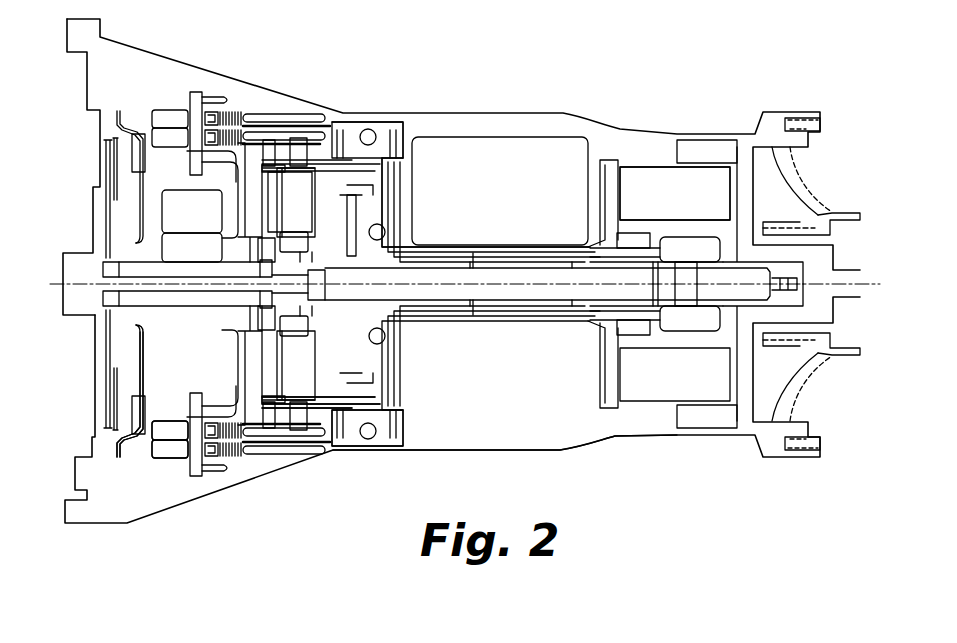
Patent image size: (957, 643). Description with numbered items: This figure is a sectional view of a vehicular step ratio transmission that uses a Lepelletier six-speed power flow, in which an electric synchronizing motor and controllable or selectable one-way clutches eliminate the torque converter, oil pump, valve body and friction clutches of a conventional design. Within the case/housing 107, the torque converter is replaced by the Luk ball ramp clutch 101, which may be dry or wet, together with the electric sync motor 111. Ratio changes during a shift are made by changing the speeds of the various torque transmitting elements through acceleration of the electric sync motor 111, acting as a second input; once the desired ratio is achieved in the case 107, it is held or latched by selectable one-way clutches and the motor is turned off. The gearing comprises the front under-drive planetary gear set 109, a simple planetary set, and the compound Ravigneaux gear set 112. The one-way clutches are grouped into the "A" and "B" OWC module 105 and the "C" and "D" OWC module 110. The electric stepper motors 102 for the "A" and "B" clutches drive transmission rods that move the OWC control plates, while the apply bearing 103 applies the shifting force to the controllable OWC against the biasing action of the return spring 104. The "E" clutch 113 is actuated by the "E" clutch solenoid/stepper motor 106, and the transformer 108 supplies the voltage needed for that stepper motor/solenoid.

The Luk ball ramp clutch 101 is at (133, 456).
The electric stepper motors 102 is at (172, 456).
The apply bearing 103 is at (221, 461).
The return spring 104 is at (254, 464).
The "A" and "B" OWC module 105 is at (304, 433).
The "E" clutch solenoid/stepper motor 106 is at (396, 251).
The case/housing 107 is at (581, 463).
The transformer for "E" clutch 108 is at (191, 233).
The front under-drive planetary gear set 109 is at (304, 206).
The "C" and "D" OWC module 110 is at (389, 135).
The electric sync motor 111 is at (504, 174).
The Ravigneaux gear set 112 is at (681, 191).
The "E" clutch 113 is at (349, 220).